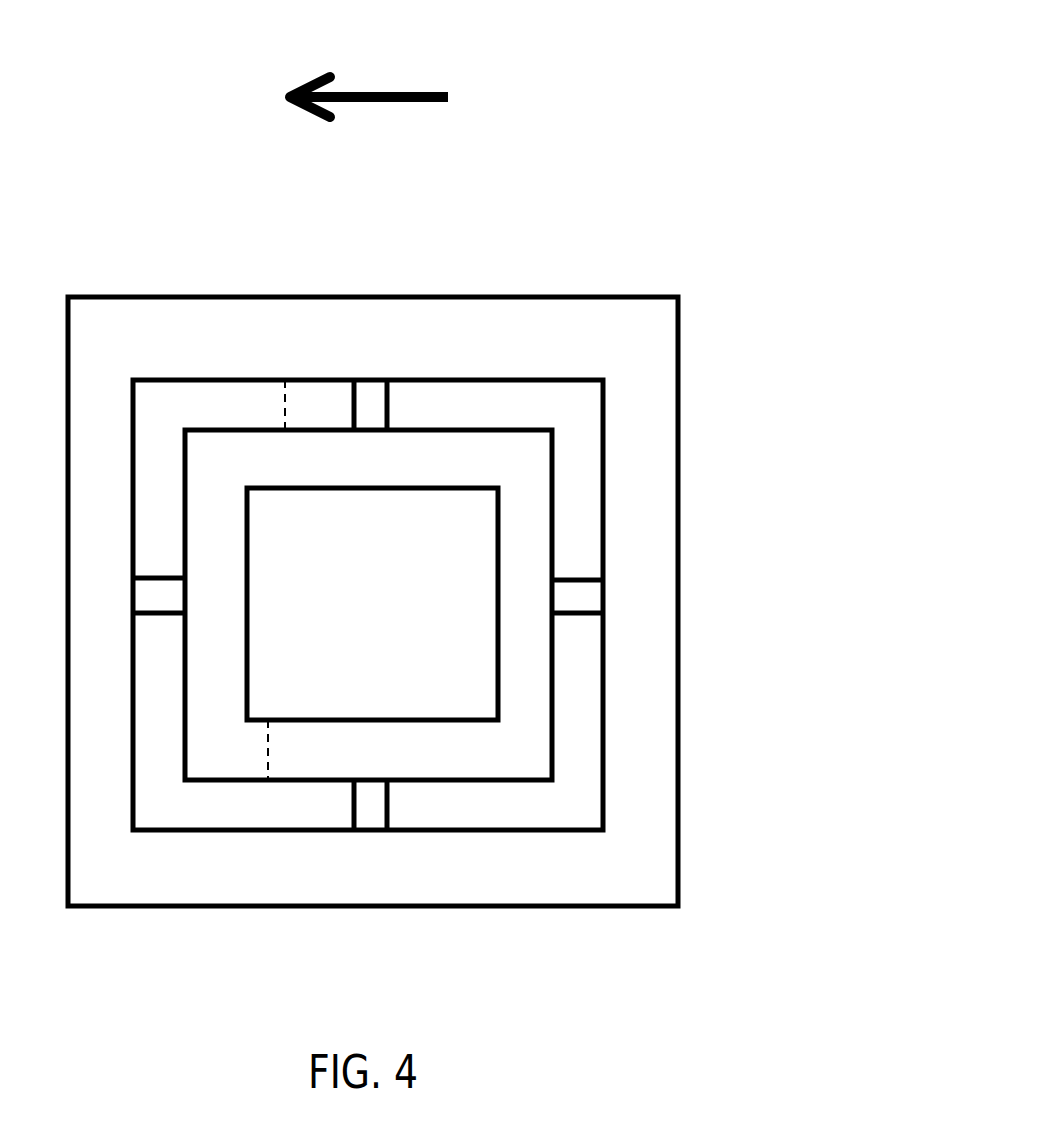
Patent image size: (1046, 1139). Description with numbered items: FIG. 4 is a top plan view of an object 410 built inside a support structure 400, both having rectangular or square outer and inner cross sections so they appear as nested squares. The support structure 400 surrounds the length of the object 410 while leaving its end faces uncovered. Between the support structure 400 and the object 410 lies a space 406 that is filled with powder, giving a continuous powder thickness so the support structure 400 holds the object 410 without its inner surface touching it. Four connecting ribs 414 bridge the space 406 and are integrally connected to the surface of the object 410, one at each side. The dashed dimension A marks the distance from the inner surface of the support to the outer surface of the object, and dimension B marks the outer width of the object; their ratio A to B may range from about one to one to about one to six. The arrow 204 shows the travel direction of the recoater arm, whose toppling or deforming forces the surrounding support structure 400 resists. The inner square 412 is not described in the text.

The arrow 204 is at (414, 92).
The support structure 400 is at (653, 328).
The space 406 is at (578, 459).
The object 410 is at (514, 666).
The central square element 412 is at (442, 518).
The connecting rib 414 is at (575, 596).
The distance from the inner surface of the removable support to an outer surface of A is at (290, 405).
The outer thickness/width of the object B is at (267, 750).